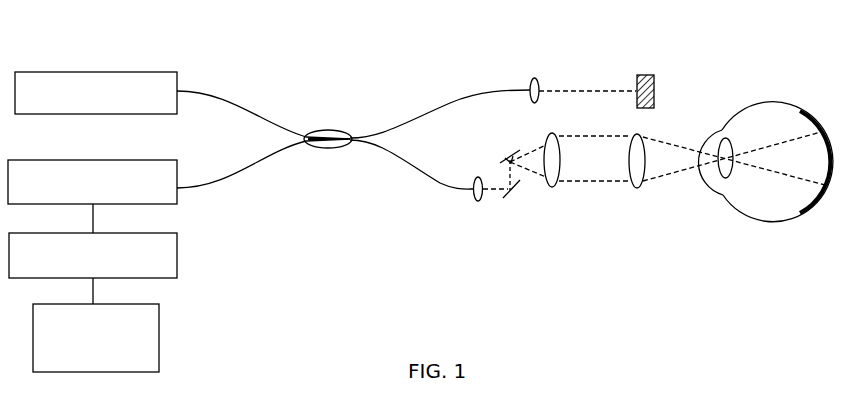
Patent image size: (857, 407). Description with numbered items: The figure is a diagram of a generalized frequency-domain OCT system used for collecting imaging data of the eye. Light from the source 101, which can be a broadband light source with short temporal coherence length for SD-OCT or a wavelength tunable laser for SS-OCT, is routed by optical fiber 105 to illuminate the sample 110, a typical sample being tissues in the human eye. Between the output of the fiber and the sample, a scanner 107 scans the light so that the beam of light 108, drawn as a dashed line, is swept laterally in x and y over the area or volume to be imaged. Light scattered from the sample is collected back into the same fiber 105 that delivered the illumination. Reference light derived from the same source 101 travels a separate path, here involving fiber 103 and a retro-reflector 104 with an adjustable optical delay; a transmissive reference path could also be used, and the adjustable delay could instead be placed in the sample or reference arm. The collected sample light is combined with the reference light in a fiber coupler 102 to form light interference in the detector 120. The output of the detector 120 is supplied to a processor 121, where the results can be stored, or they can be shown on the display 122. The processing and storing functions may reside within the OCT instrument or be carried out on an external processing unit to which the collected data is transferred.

The light source 101 is at (93, 69).
The fiber coupler 102 is at (318, 146).
The fiber 103 is at (442, 100).
The retro-reflector 104 is at (651, 62).
The optical fiber 105 is at (423, 192).
The scanner 107 is at (522, 198).
The beam of light 108 is at (763, 159).
The sample 110 is at (794, 97).
The detector 120 is at (182, 168).
The processor 121 is at (182, 258).
The display 122 is at (167, 338).